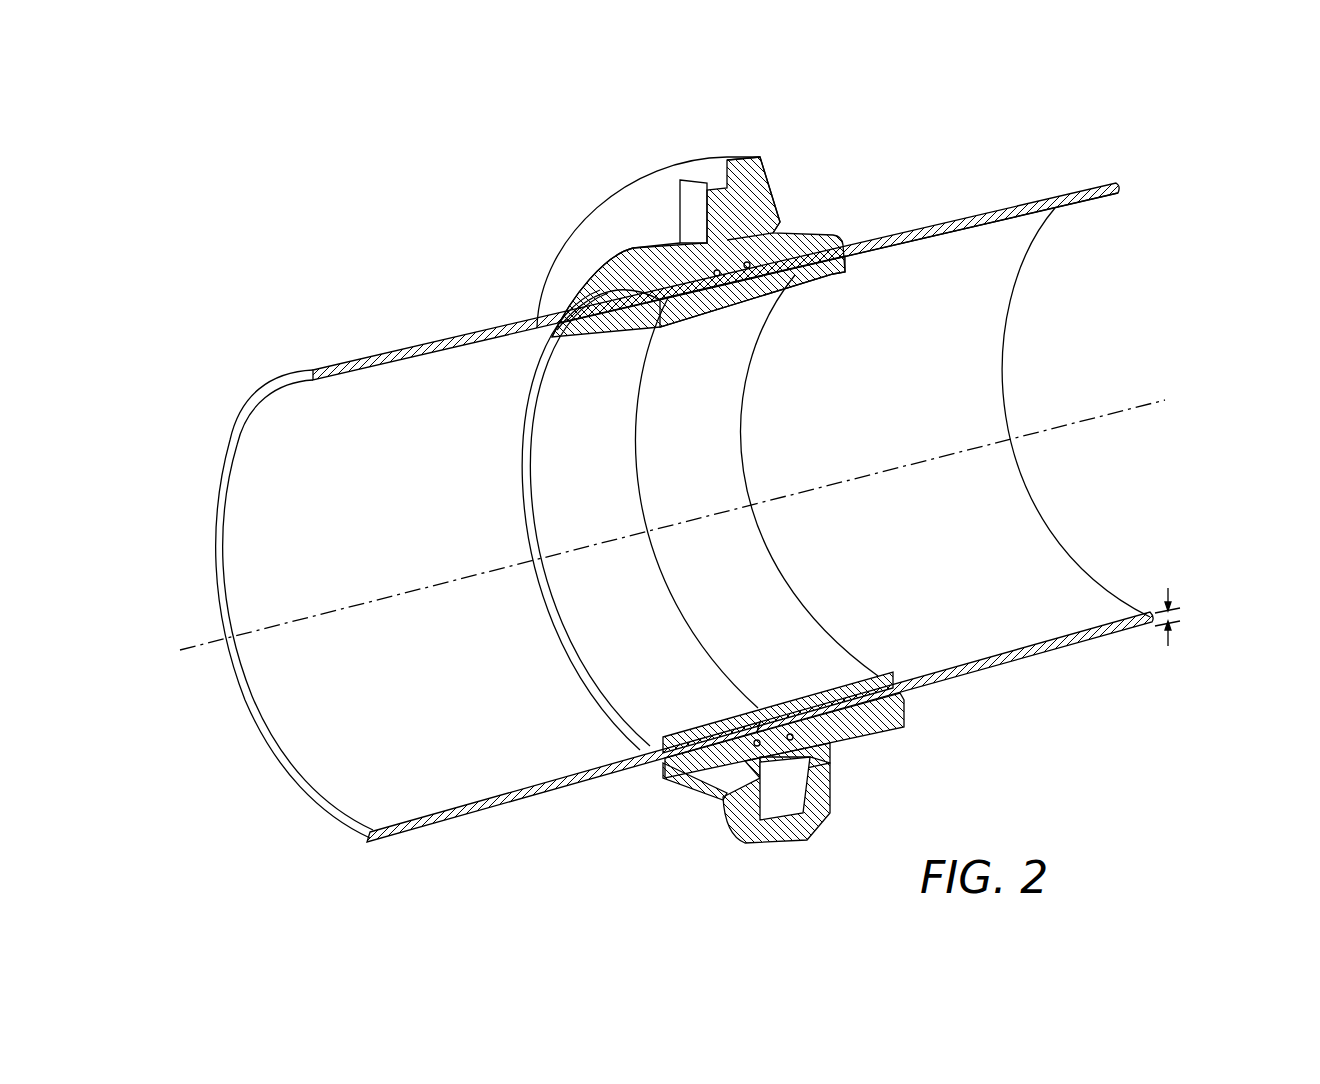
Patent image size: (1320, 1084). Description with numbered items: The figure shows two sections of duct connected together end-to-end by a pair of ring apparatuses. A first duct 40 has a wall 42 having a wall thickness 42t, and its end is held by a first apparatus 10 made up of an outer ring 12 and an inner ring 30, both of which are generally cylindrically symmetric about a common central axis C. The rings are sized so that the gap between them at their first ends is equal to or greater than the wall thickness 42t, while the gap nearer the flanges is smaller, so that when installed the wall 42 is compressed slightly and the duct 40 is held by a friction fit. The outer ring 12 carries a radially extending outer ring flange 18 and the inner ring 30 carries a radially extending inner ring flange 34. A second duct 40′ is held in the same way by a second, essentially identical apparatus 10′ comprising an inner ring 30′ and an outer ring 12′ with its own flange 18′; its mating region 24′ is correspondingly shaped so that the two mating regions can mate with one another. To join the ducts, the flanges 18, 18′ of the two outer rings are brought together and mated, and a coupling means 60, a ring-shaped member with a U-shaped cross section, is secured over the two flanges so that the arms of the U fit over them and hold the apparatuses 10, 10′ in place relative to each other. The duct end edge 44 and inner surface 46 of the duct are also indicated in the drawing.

The apparatus 10 is at (853, 730).
The second apparatus 10′ is at (612, 262).
The outer ring 12 is at (778, 205).
The outer ring 12′ is at (720, 765).
The outer ring flange 18 is at (735, 157).
The outer ring flange 18′ is at (700, 230).
The mating region 24′ is at (747, 800).
The inner ring 30 is at (830, 275).
The inner ring 30′ is at (660, 773).
The inner ring flange 34 is at (783, 717).
The duct 40 is at (1079, 182).
The second duct 40′ is at (427, 832).
The wall 42 is at (1092, 597).
The wall thickness 42t is at (1181, 611).
The duct end edge 44 is at (1054, 543).
The duct inner surface 46 is at (1023, 203).
The coupling means 60 is at (706, 158).
The central axis C is at (670, 526).